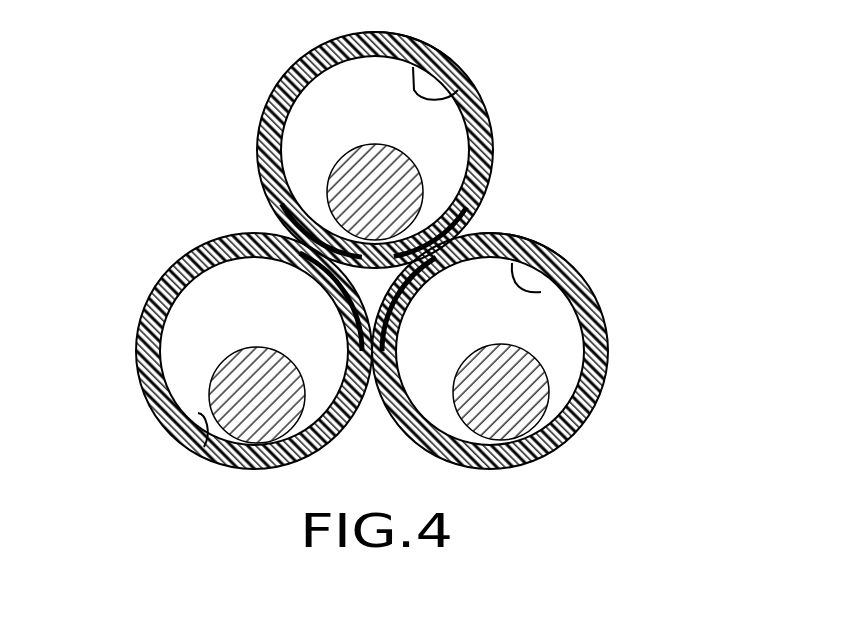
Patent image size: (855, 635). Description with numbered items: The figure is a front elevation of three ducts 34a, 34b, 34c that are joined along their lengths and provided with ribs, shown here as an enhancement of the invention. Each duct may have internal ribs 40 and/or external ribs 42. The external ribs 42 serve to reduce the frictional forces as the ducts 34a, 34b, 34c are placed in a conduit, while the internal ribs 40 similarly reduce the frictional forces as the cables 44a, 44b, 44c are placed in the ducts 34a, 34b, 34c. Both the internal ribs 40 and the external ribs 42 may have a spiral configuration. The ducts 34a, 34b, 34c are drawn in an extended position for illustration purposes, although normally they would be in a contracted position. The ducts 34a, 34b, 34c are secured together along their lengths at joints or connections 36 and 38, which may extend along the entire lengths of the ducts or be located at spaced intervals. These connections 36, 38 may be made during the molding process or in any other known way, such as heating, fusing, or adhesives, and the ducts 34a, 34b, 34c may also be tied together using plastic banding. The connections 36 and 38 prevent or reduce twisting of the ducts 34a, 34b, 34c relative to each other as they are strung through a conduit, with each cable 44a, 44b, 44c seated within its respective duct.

The duct 34a is at (273, 115).
The duct 34b is at (148, 302).
The duct 34c is at (603, 343).
The cable 44a is at (362, 196).
The cable 44b is at (270, 422).
The cable 44c is at (512, 417).
The external ribs 42 is at (405, 42).
The internal ribs 40 is at (458, 90).
The connection 38 is at (290, 237).
The connection 36 is at (455, 240).